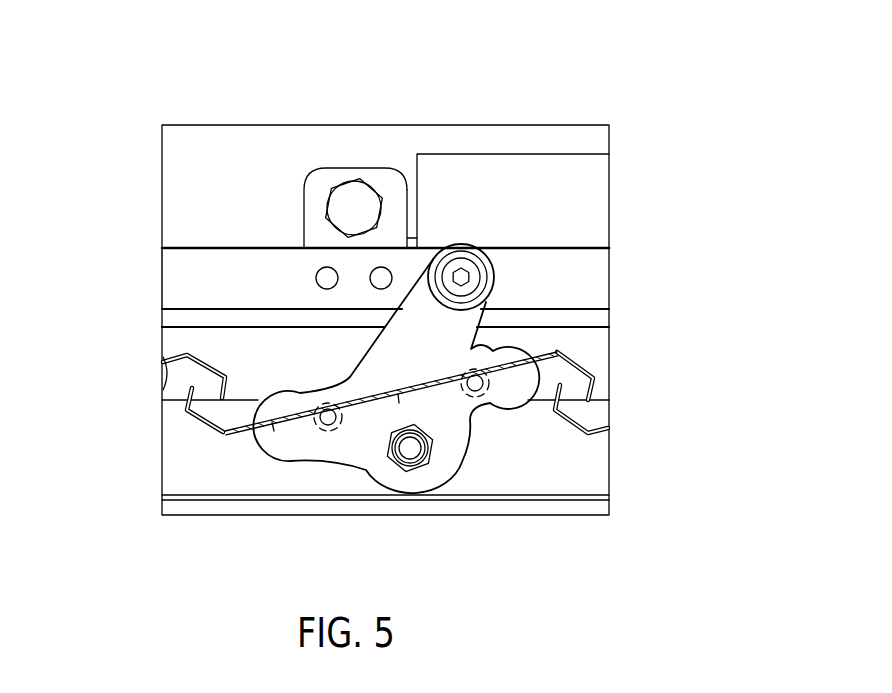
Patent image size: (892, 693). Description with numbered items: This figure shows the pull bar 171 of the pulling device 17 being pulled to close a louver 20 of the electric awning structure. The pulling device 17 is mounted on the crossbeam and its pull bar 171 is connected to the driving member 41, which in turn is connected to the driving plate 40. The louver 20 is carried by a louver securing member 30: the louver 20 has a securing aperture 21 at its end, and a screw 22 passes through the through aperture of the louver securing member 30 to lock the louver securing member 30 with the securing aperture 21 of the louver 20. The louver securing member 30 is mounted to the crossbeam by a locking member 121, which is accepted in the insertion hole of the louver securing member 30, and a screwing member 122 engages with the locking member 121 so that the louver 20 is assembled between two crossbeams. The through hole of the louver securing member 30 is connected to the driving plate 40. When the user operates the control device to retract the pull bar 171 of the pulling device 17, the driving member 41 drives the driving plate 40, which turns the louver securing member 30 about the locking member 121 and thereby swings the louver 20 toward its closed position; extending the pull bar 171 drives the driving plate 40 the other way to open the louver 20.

The pulling device 17 is at (563, 180).
The pull bar 171 is at (410, 187).
The driving member 41 is at (320, 188).
The driving plate 40 is at (238, 258).
The louver 20 is at (162, 347).
The louver securing member 30 is at (276, 446).
The securing aperture 21 is at (325, 428).
The screw 22 is at (337, 429).
The locking member 121 is at (412, 452).
The screwing member 122 is at (425, 450).